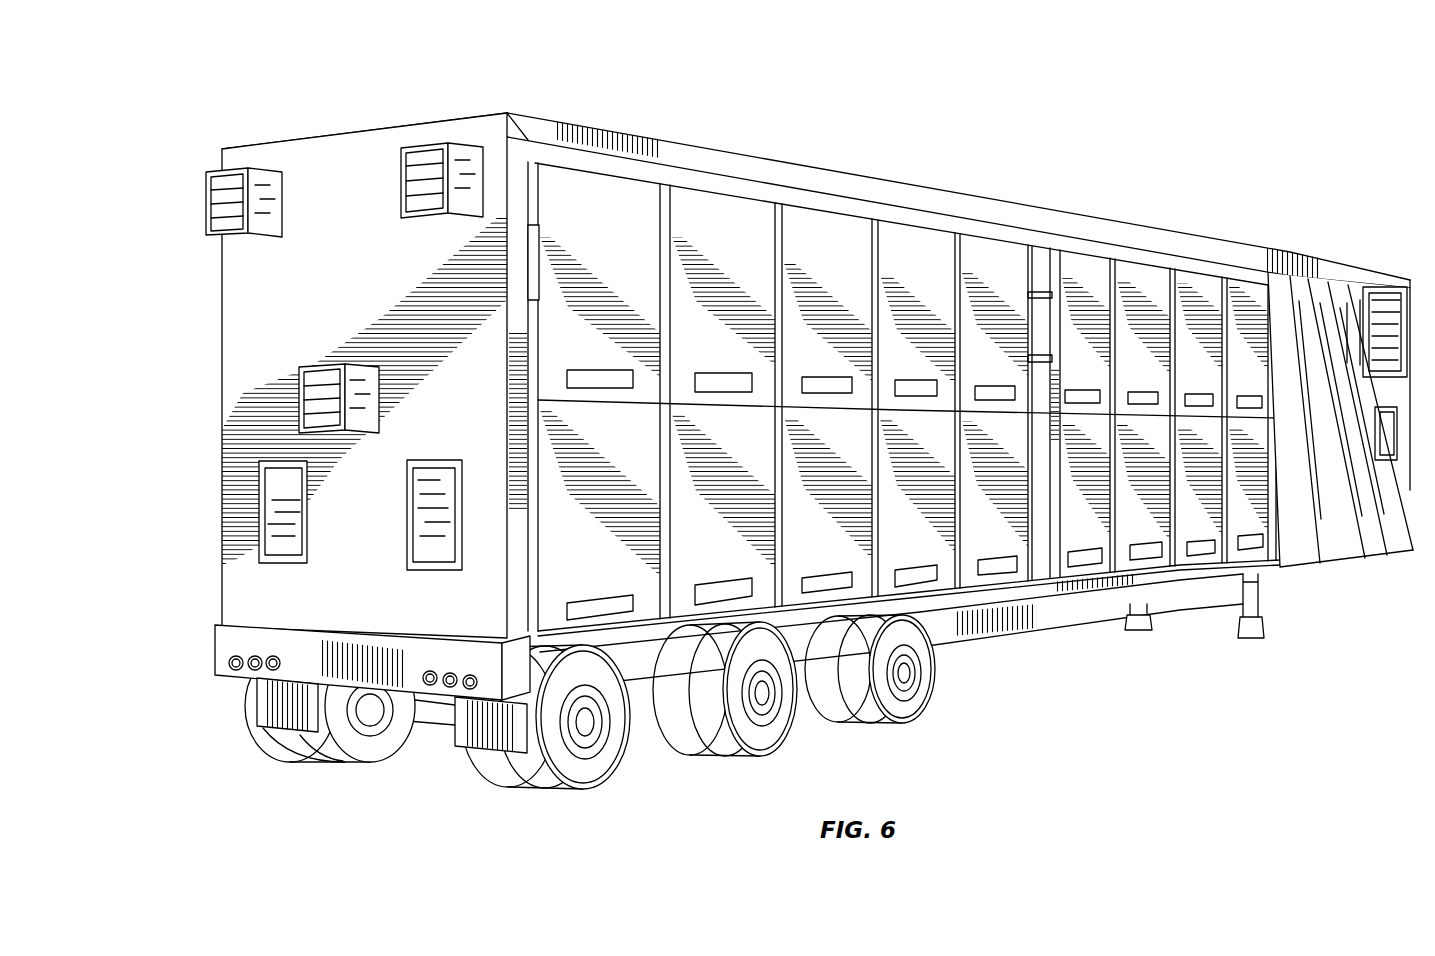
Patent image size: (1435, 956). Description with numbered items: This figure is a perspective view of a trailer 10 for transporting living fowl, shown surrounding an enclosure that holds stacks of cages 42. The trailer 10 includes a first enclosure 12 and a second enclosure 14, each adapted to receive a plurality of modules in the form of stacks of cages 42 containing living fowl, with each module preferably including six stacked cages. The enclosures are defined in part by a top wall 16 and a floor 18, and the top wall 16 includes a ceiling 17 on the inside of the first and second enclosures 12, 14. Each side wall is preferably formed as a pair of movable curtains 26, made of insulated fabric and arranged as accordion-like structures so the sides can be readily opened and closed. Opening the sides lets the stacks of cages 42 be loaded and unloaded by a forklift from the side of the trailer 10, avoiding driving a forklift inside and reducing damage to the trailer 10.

The trailer 10 is at (155, 193).
The first enclosure 12 is at (614, 164).
The second enclosure 14 is at (1108, 244).
The top wall 16 is at (537, 113).
The ceiling 17 is at (755, 190).
The floor 18 is at (927, 590).
The movable curtains 26 is at (1318, 300).
The stacks of cages 42 is at (848, 250).